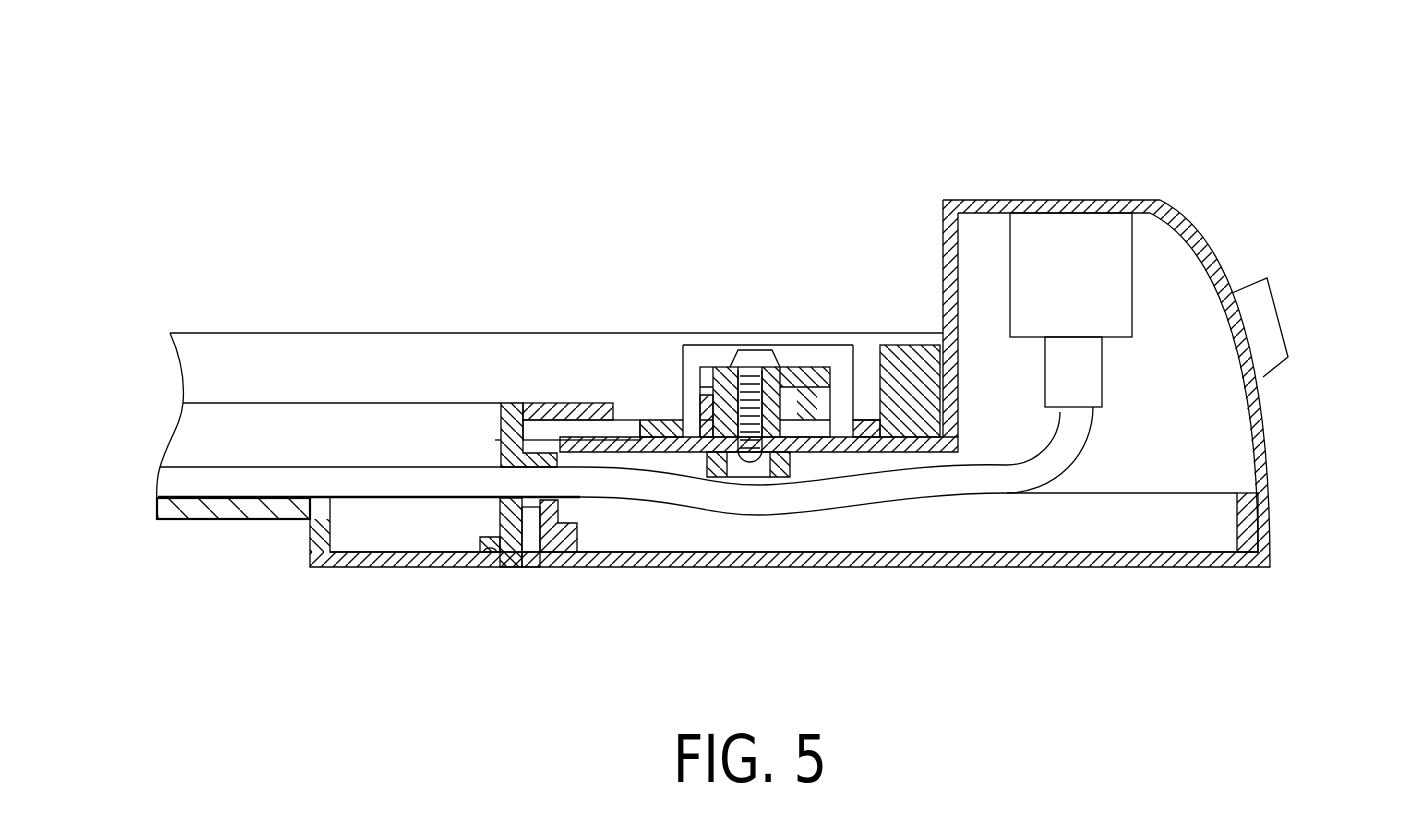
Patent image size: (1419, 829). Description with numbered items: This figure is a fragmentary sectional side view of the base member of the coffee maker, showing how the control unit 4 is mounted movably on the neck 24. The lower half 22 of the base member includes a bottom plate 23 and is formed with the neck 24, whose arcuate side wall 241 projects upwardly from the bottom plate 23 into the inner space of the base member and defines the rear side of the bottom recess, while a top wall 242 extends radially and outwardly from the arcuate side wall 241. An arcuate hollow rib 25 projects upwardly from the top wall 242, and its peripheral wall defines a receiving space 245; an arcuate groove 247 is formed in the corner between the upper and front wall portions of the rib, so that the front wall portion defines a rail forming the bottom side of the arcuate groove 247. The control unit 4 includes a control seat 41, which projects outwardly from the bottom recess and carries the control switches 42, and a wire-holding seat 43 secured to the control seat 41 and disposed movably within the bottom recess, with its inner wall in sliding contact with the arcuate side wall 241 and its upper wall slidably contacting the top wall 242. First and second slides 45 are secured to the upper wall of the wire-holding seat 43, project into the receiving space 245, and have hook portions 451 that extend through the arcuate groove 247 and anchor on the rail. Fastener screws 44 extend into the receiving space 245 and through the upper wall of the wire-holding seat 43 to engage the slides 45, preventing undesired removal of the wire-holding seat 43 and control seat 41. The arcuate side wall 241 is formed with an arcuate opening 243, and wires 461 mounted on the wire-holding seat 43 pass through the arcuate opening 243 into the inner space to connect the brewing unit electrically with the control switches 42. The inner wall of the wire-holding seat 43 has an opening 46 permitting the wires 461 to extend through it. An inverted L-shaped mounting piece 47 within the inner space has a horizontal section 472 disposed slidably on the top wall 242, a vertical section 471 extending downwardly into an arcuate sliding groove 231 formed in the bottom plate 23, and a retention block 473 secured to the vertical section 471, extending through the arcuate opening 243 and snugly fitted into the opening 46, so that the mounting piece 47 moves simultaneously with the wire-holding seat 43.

The control unit 4 is at (1163, 200).
The control seat 41 is at (1232, 468).
The control switches 42 is at (1290, 342).
The lower half 22 is at (192, 520).
The bottom plate 23 is at (252, 508).
The wire-holding seat 43 is at (820, 548).
The opening 46 is at (567, 502).
The wires 461 is at (333, 483).
The neck 24 is at (670, 437).
The arcuate side wall 241 is at (520, 440).
The top wall 242 is at (648, 430).
The receiving space 245 is at (712, 395).
The arcuate groove 247 is at (785, 367).
The arcuate hollow rib 25 is at (745, 347).
The fastener screws 44 is at (747, 462).
The slides 45 is at (862, 400).
The hook portions 451 is at (785, 405).
The mounting piece 47 is at (495, 508).
The vertical section 471 is at (500, 440).
The horizontal section 472 is at (590, 405).
The retention block 473 is at (556, 500).
The arcuate sliding groove 231 is at (497, 540).
The arcuate opening 243 is at (530, 515).